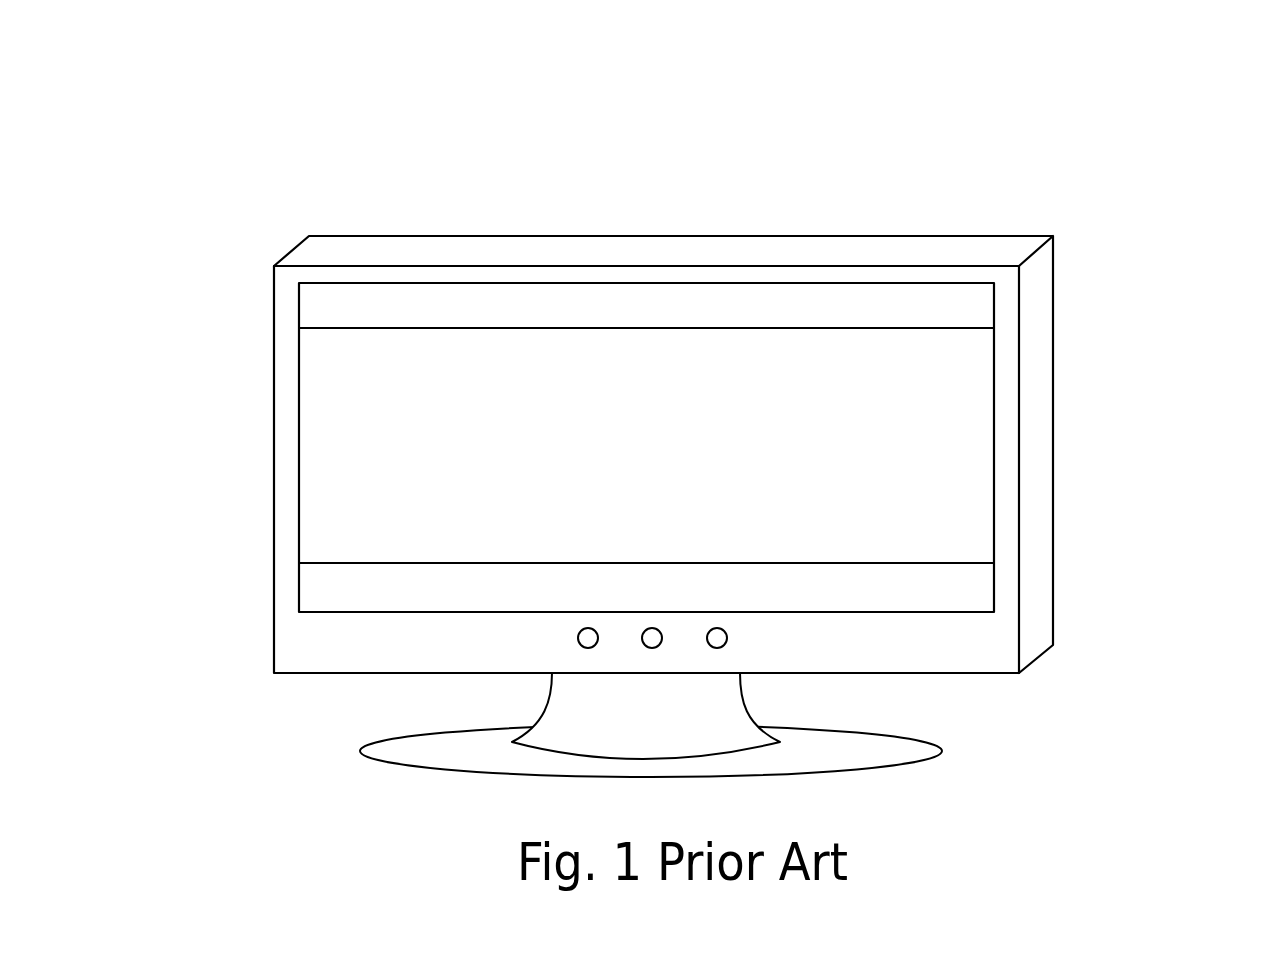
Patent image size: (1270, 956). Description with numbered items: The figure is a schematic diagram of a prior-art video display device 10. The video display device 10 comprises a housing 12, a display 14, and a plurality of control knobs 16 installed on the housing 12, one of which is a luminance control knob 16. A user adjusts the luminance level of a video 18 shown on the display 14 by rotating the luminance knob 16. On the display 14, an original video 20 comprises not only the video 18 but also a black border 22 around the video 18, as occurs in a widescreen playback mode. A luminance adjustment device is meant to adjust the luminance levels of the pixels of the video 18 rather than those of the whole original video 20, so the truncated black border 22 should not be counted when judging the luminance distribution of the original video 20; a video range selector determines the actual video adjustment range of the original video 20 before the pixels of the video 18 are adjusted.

The video display device 10 is at (1128, 153).
The housing 12 is at (385, 248).
The display 14 is at (323, 468).
The control knobs 16 is at (655, 648).
The video 18 is at (792, 360).
The original video 20 is at (910, 142).
The black border 22 is at (887, 313).